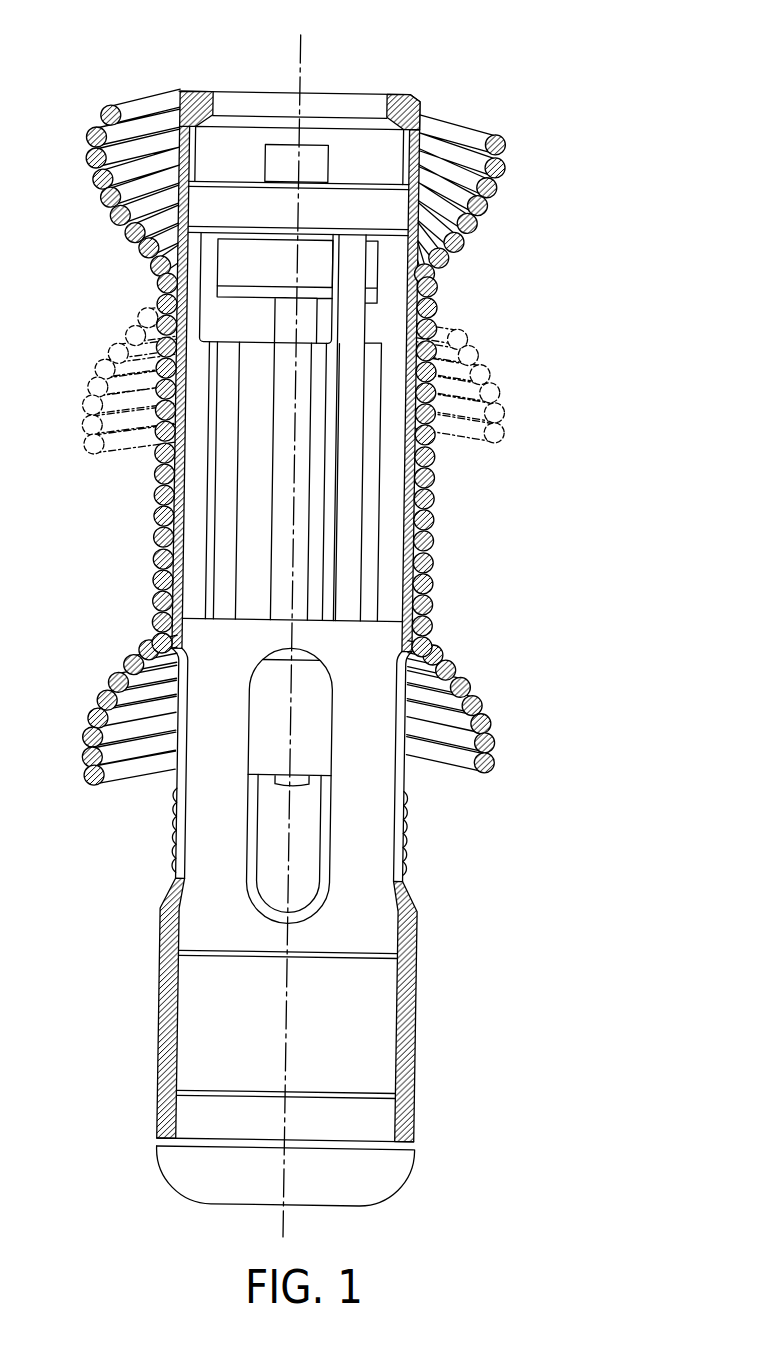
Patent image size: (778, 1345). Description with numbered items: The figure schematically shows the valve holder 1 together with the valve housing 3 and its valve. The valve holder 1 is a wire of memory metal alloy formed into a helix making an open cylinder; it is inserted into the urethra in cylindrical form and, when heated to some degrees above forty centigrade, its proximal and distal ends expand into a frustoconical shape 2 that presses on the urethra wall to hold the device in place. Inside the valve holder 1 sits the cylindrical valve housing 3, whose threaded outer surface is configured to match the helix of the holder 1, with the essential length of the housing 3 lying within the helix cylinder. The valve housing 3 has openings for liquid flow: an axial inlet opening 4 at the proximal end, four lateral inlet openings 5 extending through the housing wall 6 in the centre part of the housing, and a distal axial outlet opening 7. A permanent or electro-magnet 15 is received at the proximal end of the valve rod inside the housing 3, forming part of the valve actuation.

The valve holder 1 is at (436, 583).
The frustoconical shape 2 is at (492, 200).
The valve housing 3 is at (428, 953).
The axial inlet opening 4 is at (366, 1113).
The lateral inlet openings 5 is at (344, 666).
The housing wall 6 is at (420, 819).
The distal axial outlet opening 7 is at (254, 110).
The permanent or electro-magnet 15 is at (278, 742).